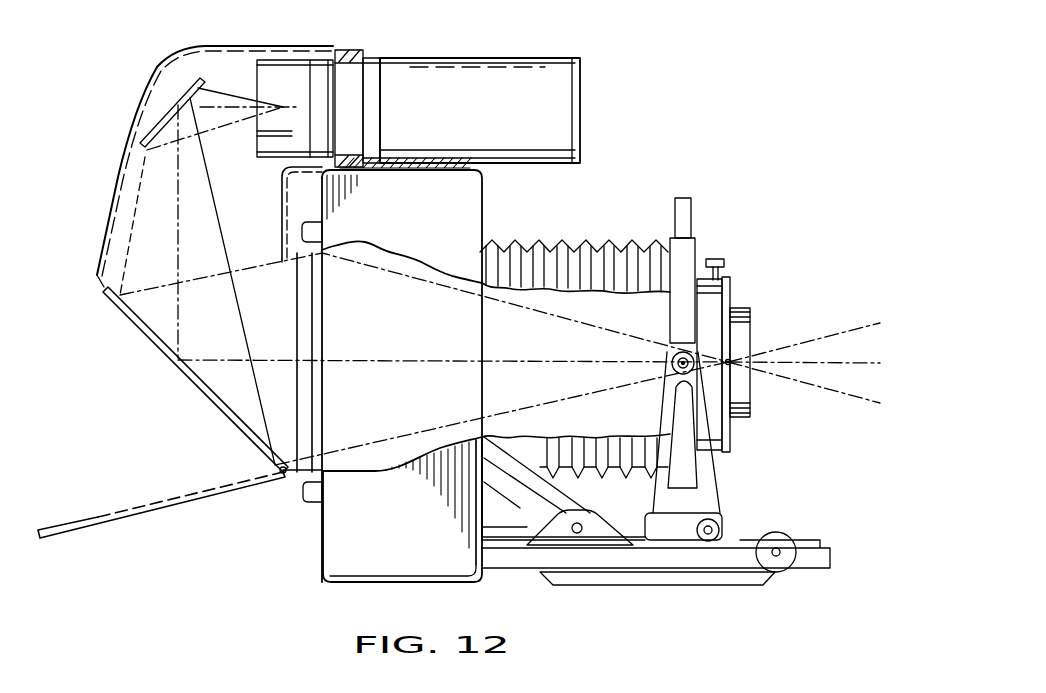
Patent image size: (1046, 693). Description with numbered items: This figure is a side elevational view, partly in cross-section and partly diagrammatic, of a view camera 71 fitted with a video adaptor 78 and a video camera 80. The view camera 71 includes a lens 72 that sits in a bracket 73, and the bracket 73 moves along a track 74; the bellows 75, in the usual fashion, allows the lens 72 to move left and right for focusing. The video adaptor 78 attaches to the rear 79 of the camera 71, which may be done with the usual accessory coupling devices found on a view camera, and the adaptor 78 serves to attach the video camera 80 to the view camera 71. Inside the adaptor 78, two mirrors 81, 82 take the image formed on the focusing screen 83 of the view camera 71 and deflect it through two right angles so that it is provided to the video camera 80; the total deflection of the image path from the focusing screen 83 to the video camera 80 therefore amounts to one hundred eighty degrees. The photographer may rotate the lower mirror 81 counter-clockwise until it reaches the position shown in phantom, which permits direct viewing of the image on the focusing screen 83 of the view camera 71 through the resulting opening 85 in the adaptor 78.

The view camera 71 is at (614, 168).
The lens 72 is at (710, 312).
The bracket 73 is at (703, 460).
The track 74 is at (745, 540).
The bellows 75 is at (598, 262).
The video adaptor 78 is at (160, 60).
The rear of the camera 79 is at (378, 533).
The video camera 80 is at (500, 122).
The lower mirror 81 is at (192, 385).
The mirror 82 is at (155, 120).
The focusing screen 83 is at (315, 305).
The opening 85 is at (122, 323).